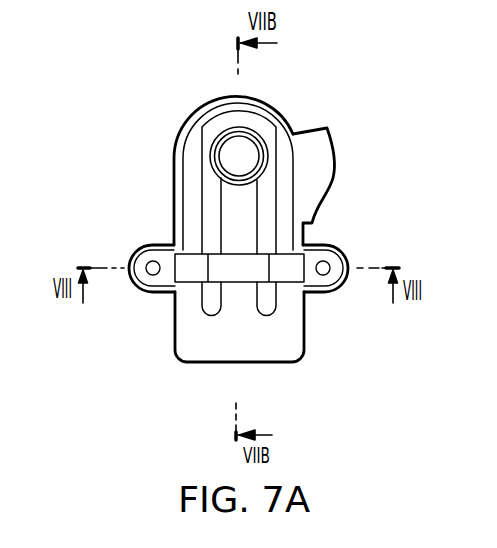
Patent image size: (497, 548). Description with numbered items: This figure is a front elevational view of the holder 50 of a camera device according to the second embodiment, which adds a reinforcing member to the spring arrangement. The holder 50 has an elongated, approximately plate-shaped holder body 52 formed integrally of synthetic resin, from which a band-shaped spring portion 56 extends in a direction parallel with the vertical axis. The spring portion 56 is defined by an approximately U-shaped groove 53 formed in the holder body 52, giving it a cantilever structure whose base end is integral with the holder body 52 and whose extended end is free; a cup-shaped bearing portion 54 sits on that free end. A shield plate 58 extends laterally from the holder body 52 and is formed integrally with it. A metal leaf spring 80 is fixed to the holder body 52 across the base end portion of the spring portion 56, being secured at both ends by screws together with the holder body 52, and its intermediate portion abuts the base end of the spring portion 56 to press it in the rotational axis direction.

The holder 50 is at (198, 95).
The holder body 52 is at (228, 350).
The U-shaped groove 53 is at (267, 215).
The bearing portion 54 is at (217, 152).
The spring portion 56 is at (232, 223).
The shield plate 58 is at (326, 150).
The leaf spring 80 is at (190, 273).